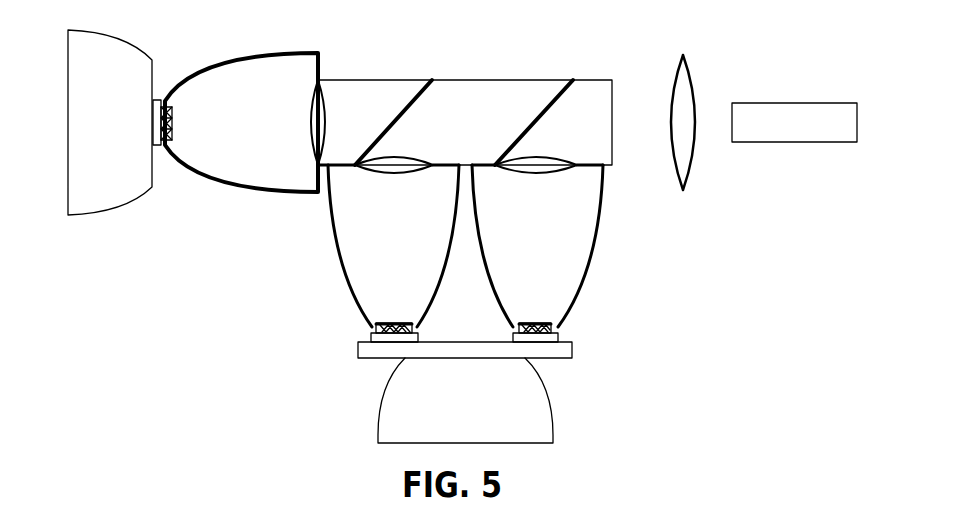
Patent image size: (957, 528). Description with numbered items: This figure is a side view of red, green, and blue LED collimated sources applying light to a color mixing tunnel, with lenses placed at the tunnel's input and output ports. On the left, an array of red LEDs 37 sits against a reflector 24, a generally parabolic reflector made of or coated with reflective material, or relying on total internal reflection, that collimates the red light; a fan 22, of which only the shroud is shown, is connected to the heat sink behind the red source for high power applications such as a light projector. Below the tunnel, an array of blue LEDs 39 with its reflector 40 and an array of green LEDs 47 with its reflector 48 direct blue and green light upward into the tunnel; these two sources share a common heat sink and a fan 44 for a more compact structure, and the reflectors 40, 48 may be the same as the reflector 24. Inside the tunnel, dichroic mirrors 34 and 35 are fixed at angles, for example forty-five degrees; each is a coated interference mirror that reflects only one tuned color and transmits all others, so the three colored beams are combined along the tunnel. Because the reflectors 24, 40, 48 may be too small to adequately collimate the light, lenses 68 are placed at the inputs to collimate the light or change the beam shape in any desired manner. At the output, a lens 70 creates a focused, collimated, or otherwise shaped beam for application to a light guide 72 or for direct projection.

The fan 22 is at (115, 107).
The reflector 24 is at (270, 188).
The dichroic mirror 34 is at (407, 100).
The dichroic mirror 35 is at (547, 102).
The red LEDs 37 is at (173, 116).
The blue LEDs 39 is at (380, 322).
The reflector 40 is at (342, 283).
The fan 44 is at (480, 409).
The green LEDs 47 is at (528, 324).
The reflector 48 is at (594, 276).
The lenses 68 is at (332, 117).
The lens 70 is at (671, 79).
The light guide 72 is at (817, 144).